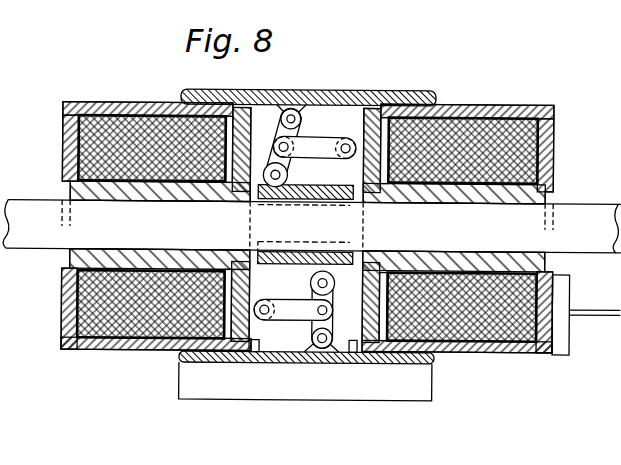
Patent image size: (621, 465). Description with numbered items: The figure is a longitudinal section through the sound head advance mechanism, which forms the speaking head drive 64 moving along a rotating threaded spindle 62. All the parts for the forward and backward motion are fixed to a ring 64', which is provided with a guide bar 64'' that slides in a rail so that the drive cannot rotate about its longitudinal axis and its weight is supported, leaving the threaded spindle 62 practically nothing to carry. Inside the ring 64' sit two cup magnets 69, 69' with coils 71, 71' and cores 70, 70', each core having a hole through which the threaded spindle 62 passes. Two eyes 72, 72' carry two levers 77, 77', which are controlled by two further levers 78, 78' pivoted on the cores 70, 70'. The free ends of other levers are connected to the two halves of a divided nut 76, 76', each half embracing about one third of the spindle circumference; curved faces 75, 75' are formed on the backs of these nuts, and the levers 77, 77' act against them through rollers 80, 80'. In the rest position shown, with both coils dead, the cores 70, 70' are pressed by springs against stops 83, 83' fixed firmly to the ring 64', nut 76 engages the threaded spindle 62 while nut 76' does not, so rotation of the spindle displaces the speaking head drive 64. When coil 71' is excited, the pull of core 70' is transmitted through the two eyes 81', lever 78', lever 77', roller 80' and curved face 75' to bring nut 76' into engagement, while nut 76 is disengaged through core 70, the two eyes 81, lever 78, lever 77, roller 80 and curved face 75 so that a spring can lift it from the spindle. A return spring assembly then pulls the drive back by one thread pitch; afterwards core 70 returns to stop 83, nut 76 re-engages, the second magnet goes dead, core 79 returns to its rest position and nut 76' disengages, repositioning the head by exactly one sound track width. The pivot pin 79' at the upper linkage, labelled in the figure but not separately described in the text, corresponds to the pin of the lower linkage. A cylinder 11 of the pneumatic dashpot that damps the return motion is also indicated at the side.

The speaking head drive 64 is at (311, 225).
The threaded spindle 62 is at (28, 240).
The cup magnet 69 is at (133, 151).
The cup magnet 69' is at (482, 152).
The core 70 is at (133, 224).
The core 70' is at (482, 223).
The coil 71 is at (152, 125).
The coil 71' is at (463, 130).
The ring 64' is at (290, 225).
The guide bar 64'' is at (292, 391).
The connecting rod 11 is at (609, 309).
The eye 72 is at (319, 368).
The eye 72' is at (294, 87).
The curved face 75 is at (325, 238).
The curved face 75' is at (305, 177).
The divided nut half 76 is at (305, 239).
The divided nut half 76' is at (304, 212).
The lever 77 is at (342, 310).
The lever 77' is at (265, 119).
The lever 78 is at (293, 326).
The lever 78' is at (315, 129).
The core 79 is at (338, 339).
The pin 79' is at (313, 112).
The roller 80 is at (308, 278).
The roller 80' is at (254, 195).
The eyes 81 is at (273, 342).
The eyes 81' is at (359, 111).
The stop 83 is at (247, 364).
The stop 83' is at (370, 367).